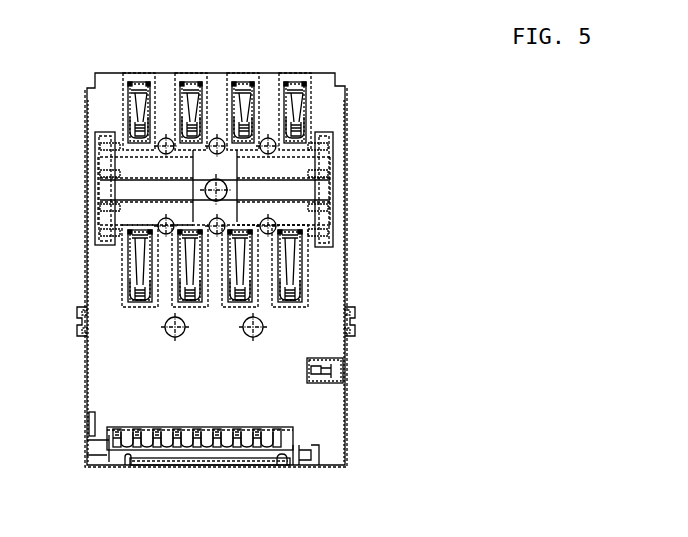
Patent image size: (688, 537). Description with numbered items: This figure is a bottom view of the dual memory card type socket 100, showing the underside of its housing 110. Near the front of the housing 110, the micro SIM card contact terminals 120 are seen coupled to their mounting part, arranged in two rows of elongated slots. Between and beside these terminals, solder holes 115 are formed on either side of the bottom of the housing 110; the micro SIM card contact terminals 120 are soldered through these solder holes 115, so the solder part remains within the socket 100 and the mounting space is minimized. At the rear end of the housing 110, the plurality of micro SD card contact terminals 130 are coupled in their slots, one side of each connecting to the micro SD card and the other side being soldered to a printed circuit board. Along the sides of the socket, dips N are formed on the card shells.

The dual memory card type socket 100 is at (127, 26).
The housing 110 is at (115, 382).
The solder holes 115 is at (345, 160).
The micro SIM card contact terminal 120 is at (300, 104).
The dips N is at (358, 318).
The micro SD card contact terminals 130 is at (345, 440).